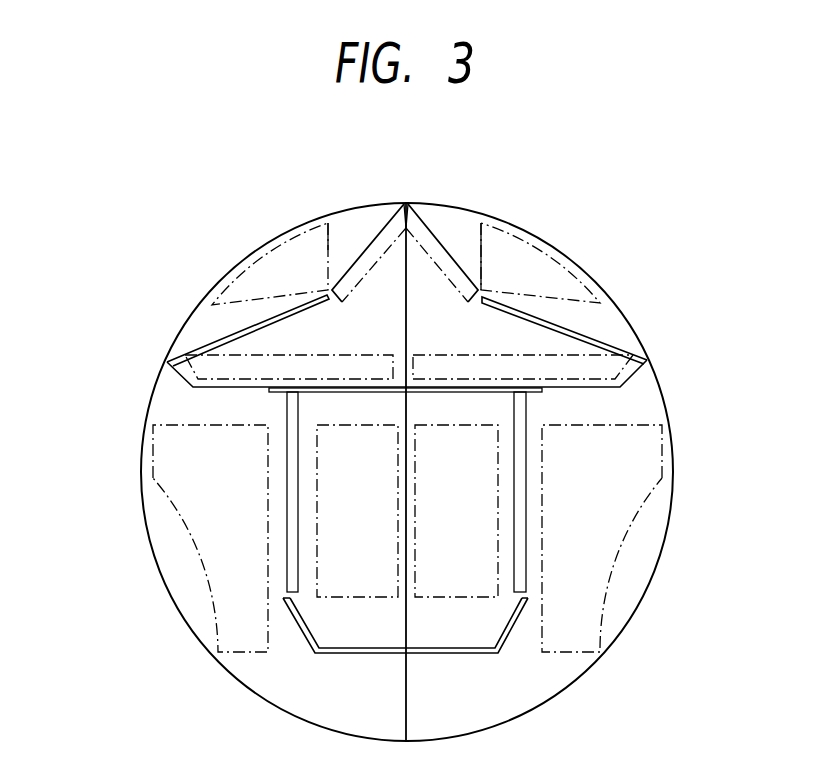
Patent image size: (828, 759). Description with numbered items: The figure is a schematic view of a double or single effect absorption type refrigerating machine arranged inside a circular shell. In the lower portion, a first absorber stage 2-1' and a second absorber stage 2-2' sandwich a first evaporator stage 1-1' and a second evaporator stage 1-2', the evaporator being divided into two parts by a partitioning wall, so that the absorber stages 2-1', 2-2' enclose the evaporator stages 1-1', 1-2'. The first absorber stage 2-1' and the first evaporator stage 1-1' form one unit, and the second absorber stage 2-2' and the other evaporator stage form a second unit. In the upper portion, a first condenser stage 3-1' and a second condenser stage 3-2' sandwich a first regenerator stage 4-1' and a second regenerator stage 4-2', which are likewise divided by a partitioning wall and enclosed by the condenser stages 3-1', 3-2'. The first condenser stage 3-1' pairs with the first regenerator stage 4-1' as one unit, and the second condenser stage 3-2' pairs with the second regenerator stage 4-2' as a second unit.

The first evaporator stage 1-1' is at (221, 511).
The second evaporator stage 1-2' is at (586, 511).
The first absorber stage 2-1' is at (164, 538).
The second absorber stage 2-2' is at (647, 538).
The first condenser stage 3-1' is at (270, 246).
The second condenser stage 3-2' is at (575, 245).
The first regenerator stage 4-1' is at (259, 313).
The second regenerator stage 4-2' is at (558, 323).